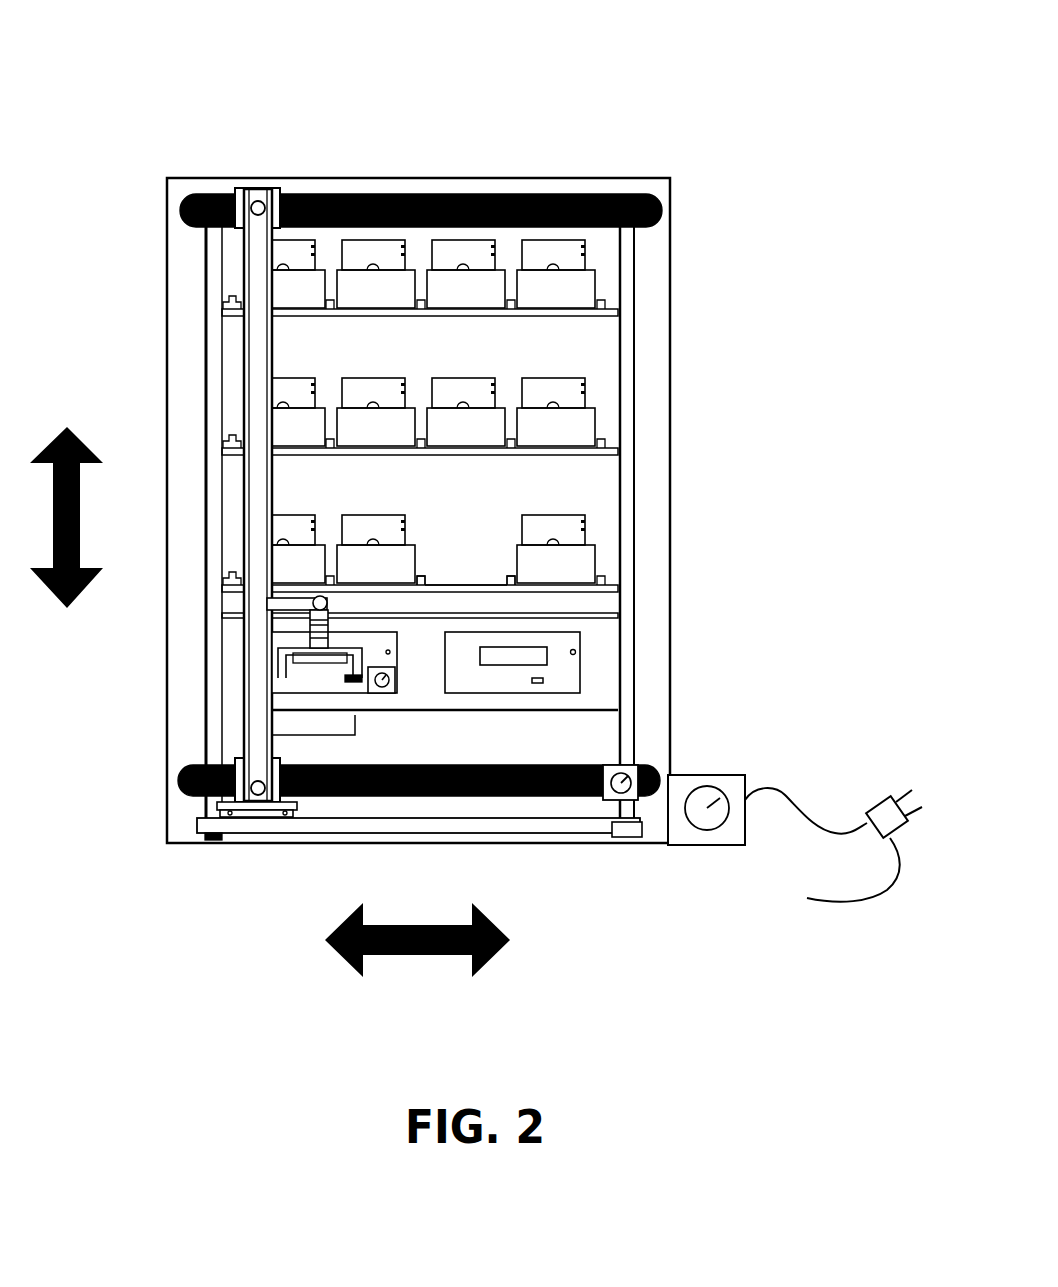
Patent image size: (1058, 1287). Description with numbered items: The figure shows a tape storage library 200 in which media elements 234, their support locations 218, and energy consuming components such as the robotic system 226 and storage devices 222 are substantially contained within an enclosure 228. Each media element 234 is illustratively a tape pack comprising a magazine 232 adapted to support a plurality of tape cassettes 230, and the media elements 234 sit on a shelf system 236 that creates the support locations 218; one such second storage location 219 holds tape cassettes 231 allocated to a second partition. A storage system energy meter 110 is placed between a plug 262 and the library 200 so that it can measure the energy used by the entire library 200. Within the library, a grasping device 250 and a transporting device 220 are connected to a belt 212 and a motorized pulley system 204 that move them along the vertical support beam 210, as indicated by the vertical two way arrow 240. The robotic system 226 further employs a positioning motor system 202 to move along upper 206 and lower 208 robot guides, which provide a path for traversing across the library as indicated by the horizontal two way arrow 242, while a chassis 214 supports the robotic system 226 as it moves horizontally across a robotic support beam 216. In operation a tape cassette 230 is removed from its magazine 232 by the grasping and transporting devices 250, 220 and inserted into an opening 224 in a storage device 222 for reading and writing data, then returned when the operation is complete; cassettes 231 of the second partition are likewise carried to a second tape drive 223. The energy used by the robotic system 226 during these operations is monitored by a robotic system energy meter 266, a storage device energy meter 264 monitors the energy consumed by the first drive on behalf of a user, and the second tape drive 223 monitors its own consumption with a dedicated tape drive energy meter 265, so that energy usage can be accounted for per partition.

The tape storage library 200 is at (374, 84).
The storage system energy meter 110 is at (708, 775).
The positioning motor system 202 is at (248, 187).
The motorized pulley system 204 is at (258, 199).
The upper robot guide 206 is at (458, 193).
The lower robot guide 208 is at (447, 797).
The vertical support beam 210 is at (240, 380).
The belt 212 is at (250, 507).
The chassis 214 is at (250, 817).
The robotic support beam 216 is at (362, 833).
The support location 218 is at (458, 556).
The second storage location 219 is at (572, 288).
The transporting device 220 is at (333, 732).
The storage device 222 is at (580, 650).
The second tape drive 223 is at (357, 693).
The opening 224 is at (502, 667).
The robotic system 226 is at (240, 650).
The enclosure 228 is at (577, 178).
The tape cassette 230 is at (555, 378).
The tape cassette 231 is at (563, 514).
The magazine 232 is at (596, 430).
The media element 234 is at (602, 562).
The shelf system 236 is at (588, 594).
The vertical two way arrow 240 is at (82, 540).
The horizontal two way arrow 242 is at (408, 955).
The grasping device 250 is at (503, 665).
The plug 262 is at (833, 848).
The storage device energy meter 264 is at (578, 673).
The dedicated tape drive energy meter 265 is at (327, 603).
The robotic system energy meter 266 is at (613, 838).